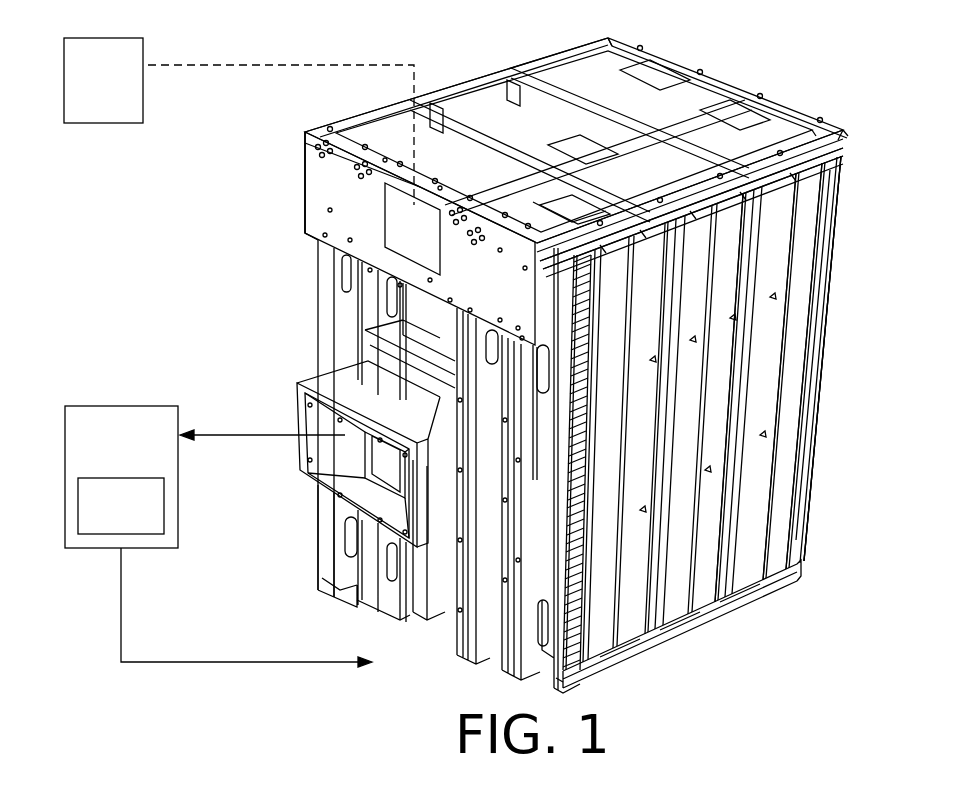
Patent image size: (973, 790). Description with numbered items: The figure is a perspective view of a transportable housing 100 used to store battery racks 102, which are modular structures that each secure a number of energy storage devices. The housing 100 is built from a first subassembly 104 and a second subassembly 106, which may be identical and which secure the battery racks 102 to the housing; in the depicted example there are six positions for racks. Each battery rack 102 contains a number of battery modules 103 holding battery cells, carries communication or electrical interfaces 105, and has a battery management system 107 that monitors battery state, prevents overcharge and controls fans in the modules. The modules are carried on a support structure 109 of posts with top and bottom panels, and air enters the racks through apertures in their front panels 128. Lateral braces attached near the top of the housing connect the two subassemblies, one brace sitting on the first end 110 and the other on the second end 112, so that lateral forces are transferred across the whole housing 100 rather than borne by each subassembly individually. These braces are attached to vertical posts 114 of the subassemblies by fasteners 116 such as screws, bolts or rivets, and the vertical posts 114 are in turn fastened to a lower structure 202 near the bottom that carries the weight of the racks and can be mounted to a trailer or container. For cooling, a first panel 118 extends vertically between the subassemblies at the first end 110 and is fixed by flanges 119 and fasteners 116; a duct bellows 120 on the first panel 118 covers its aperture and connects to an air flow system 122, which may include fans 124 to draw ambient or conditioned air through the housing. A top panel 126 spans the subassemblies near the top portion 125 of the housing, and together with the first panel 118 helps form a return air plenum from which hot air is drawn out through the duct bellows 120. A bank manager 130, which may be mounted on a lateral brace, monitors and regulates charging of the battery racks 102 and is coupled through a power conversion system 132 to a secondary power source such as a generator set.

The transportable housing 100 is at (771, 57).
The battery racks 102 is at (766, 338).
The battery modules 103 is at (572, 600).
The first subassembly 104 is at (799, 98).
The communication and/or electrical interfaces 105 is at (770, 187).
The second subassembly 106 is at (656, 46).
The battery management system 107 is at (570, 205).
The support structure 109 is at (577, 640).
The first end 110 is at (264, 268).
The second end 112 is at (872, 238).
The vertical posts 114 is at (462, 650).
The fasteners 116 is at (322, 148).
The first panel 118 is at (433, 590).
The flanges 119 is at (403, 308).
The duct bellows 120 is at (282, 391).
The air flow system 122 is at (218, 536).
The fans 124 is at (121, 506).
The top portion 125 is at (560, 52).
The top panel 126 is at (567, 137).
The front panels 128 is at (790, 463).
The bank manager 130 is at (412, 229).
The power conversion system 132 is at (239, 121).
The lower structure 202 is at (755, 592).